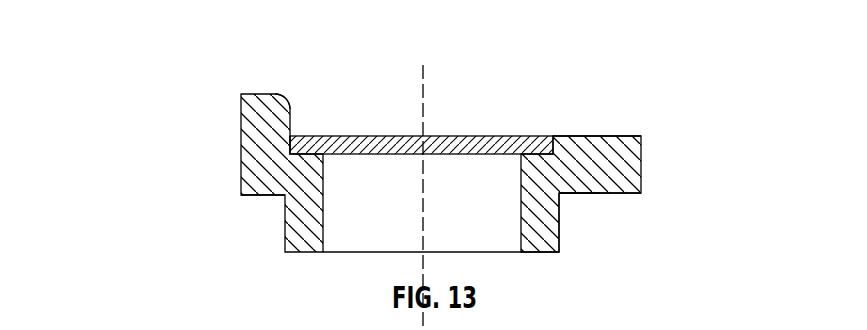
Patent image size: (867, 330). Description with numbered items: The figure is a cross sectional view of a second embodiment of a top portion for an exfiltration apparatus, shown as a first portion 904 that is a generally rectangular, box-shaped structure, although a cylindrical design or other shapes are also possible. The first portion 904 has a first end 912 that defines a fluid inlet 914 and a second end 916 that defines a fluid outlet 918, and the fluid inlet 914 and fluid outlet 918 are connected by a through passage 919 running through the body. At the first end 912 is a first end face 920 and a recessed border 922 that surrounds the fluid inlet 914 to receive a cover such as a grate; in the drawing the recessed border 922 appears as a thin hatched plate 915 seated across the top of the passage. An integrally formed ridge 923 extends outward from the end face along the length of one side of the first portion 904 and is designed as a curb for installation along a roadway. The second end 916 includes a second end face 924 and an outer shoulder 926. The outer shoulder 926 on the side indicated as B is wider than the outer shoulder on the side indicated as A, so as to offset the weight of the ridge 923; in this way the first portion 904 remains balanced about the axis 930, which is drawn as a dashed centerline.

The first portion 904 is at (135, 94).
The first end 912 is at (571, 93).
The fluid inlet 914 is at (392, 162).
The plate 915 is at (487, 136).
The second end 916 is at (247, 275).
The fluid outlet 918 is at (377, 243).
The through passage 919 is at (373, 208).
The first end face 920 is at (596, 136).
The recessed border 922 is at (309, 153).
The ridge 923 is at (267, 110).
The second end face 924 is at (545, 252).
The outer shoulder 926 is at (607, 195).
The axis 930 is at (429, 71).
The side A is at (262, 196).
The side B is at (578, 193).